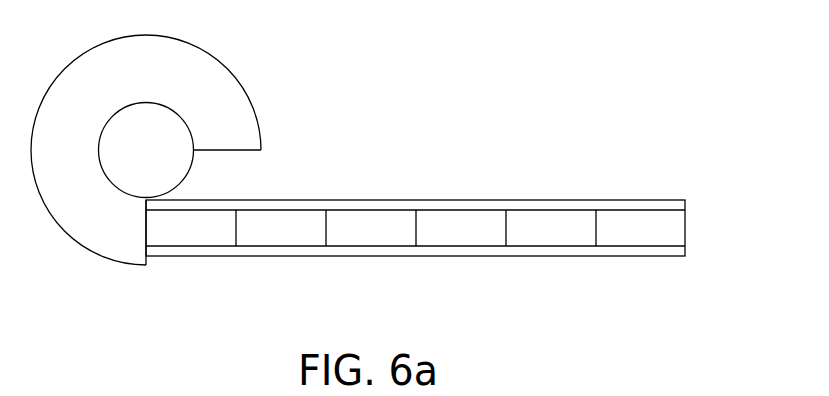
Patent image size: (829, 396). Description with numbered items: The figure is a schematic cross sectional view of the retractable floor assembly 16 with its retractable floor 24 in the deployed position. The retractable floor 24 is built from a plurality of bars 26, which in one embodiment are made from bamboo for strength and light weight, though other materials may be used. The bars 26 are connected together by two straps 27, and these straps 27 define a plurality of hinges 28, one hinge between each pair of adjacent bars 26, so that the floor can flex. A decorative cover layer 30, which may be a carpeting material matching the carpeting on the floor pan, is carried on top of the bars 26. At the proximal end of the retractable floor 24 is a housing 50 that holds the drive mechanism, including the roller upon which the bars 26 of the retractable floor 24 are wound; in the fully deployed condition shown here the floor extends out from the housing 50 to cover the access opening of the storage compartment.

The retractable floor assembly 16 is at (563, 88).
The retractable floor 24 is at (686, 232).
The bars 26 is at (642, 233).
The straps 27 is at (518, 257).
The hinges 28 is at (236, 257).
The decorative cover layer 30 is at (453, 205).
The housing 50 is at (220, 85).